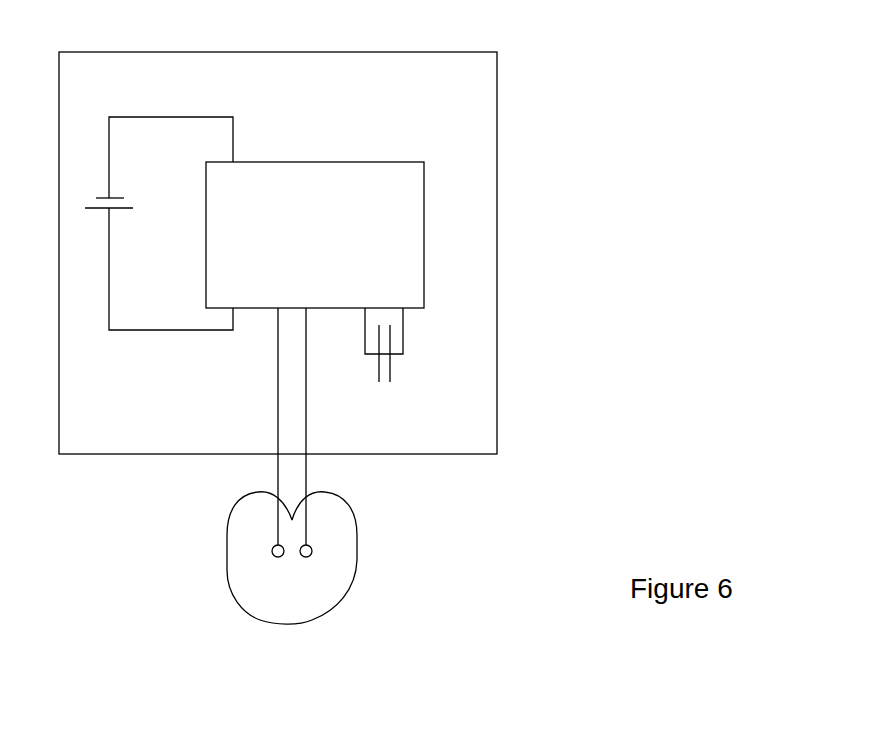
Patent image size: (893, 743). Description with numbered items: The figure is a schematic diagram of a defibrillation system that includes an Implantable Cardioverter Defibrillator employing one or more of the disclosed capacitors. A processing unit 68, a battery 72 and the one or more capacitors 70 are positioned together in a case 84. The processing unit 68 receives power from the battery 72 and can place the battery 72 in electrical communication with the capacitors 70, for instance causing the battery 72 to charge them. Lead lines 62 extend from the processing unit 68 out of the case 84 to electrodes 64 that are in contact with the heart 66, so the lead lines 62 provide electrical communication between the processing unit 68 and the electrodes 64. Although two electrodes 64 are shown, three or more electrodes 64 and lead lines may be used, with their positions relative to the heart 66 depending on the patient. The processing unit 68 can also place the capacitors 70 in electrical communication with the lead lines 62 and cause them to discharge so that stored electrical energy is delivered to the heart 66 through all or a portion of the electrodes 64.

The case 84 is at (77, 52).
The battery 72 is at (123, 210).
The processing unit 68 is at (296, 162).
The capacitors 70 is at (379, 389).
The lead lines 62 is at (278, 410).
The heart 66 is at (233, 596).
The electrodes 64 is at (307, 558).